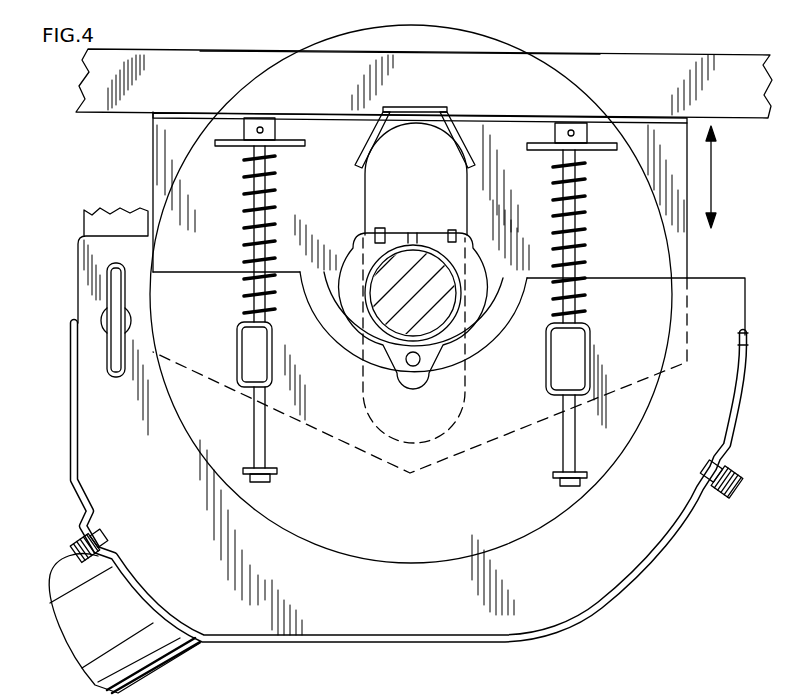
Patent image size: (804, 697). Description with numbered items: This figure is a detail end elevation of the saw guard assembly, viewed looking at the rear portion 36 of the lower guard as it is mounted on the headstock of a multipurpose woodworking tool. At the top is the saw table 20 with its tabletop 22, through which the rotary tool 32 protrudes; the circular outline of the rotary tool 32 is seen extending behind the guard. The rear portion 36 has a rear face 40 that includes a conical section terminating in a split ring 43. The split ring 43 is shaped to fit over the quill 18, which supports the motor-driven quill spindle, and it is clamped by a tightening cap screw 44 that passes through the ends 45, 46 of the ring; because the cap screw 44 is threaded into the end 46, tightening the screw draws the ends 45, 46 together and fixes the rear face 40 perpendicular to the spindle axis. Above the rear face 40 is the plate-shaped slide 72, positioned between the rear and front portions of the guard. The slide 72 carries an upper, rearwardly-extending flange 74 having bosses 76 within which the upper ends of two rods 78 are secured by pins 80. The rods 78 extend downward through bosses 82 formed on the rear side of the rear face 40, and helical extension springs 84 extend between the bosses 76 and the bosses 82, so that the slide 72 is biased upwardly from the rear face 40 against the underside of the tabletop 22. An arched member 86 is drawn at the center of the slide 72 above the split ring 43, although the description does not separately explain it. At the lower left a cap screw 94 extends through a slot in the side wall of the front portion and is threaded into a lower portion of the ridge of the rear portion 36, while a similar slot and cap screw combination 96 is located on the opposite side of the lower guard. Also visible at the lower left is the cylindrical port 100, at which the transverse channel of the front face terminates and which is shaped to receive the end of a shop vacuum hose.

The quill 18 is at (445, 303).
The saw table 20 is at (716, 70).
The tabletop 22 is at (592, 54).
The rotary tool 32 is at (488, 35).
The rear portion 36 is at (594, 574).
The rear face 40 is at (397, 511).
The split ring 43 is at (378, 334).
The tightening cap screw 44 is at (380, 228).
The ring end 45 is at (401, 235).
The ring end 46 is at (430, 233).
The slide 72 is at (608, 265).
The flange 74 is at (310, 116).
The boss 76 is at (246, 130).
The rod 78 is at (266, 460).
The pin 80 is at (290, 136).
The boss 82 is at (237, 342).
The helical extension spring 84 is at (274, 197).
The arch member 86 is at (467, 175).
The cap screw 94 is at (76, 551).
The slot and cap screw combination 96 is at (738, 490).
The cylindrical port 100 is at (148, 656).